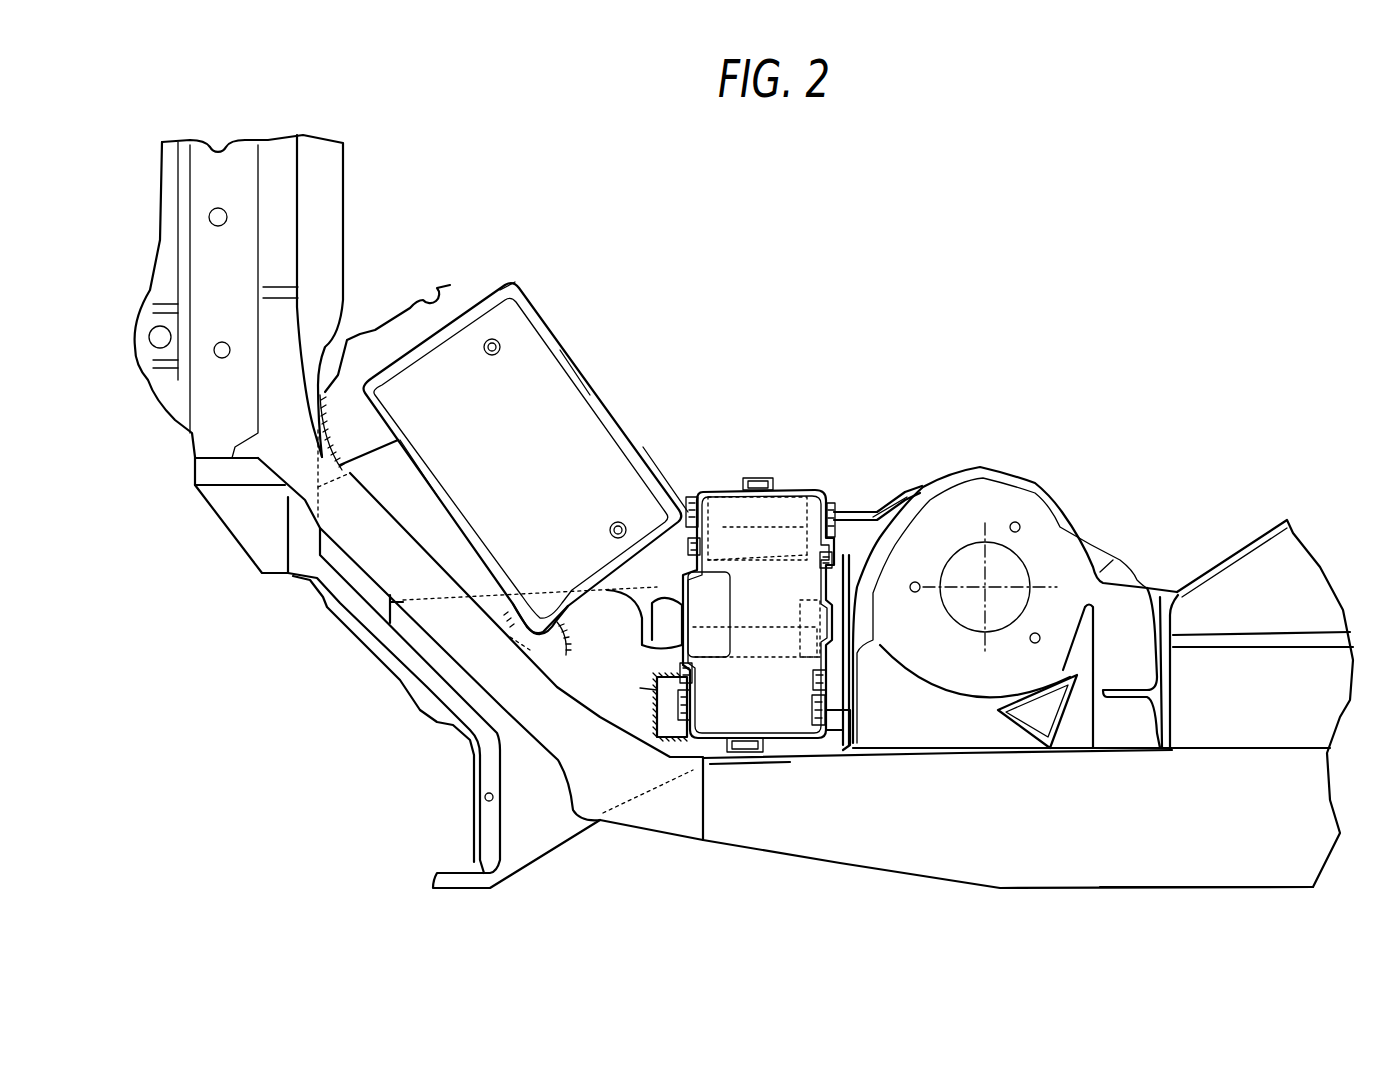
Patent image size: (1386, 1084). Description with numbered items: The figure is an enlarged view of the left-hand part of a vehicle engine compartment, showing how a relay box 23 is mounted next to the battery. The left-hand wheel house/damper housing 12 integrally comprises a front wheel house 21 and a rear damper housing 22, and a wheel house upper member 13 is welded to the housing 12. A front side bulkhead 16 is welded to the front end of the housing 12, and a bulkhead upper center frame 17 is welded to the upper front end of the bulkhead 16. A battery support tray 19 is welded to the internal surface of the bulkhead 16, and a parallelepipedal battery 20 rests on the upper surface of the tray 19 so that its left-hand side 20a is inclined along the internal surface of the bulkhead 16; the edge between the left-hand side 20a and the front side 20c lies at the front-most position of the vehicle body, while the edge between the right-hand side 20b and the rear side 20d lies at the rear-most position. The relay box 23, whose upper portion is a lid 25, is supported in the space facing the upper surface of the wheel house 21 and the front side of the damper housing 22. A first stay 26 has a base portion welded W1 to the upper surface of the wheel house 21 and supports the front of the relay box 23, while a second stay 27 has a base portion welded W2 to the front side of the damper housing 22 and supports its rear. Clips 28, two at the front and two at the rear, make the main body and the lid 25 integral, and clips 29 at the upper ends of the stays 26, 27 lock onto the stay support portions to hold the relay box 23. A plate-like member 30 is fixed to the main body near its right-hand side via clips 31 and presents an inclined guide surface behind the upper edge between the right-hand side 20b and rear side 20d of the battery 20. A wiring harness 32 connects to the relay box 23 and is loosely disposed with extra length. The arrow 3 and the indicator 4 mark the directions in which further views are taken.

The viewing direction arrow 3 is at (810, 312).
The section/viewing direction indicator 4 is at (670, 513).
The wheel house/damper housing 12 is at (990, 455).
The wheel house upper member 13 is at (1233, 730).
The front side bulkhead 16 is at (450, 632).
The bulkhead upper center frame 17 is at (290, 212).
The battery support tray 19 is at (375, 335).
The battery 20 is at (526, 458).
The left-hand side of battery 20a is at (423, 482).
The right-hand side of battery 20b is at (582, 372).
The front side of battery 20c is at (470, 300).
The rear side of battery 20d is at (580, 606).
The front wheel house 21 is at (627, 713).
The rear damper housing 22 is at (1067, 537).
The relay box 23 is at (828, 485).
The lid 25 is at (787, 735).
The first stay 26 is at (667, 752).
The second stay 27 is at (862, 603).
The clip 28 is at (712, 549).
The clip 29 is at (848, 500).
The plate-like member 30 is at (735, 495).
The clip 31 is at (690, 495).
The wiring harness 32 is at (606, 590).
The weld W1 is at (647, 688).
The weld W2 is at (912, 505).